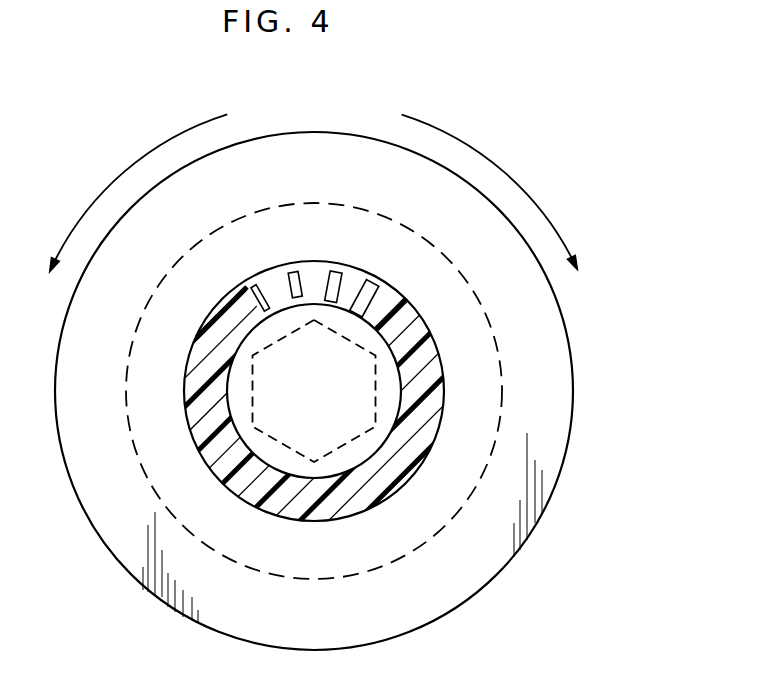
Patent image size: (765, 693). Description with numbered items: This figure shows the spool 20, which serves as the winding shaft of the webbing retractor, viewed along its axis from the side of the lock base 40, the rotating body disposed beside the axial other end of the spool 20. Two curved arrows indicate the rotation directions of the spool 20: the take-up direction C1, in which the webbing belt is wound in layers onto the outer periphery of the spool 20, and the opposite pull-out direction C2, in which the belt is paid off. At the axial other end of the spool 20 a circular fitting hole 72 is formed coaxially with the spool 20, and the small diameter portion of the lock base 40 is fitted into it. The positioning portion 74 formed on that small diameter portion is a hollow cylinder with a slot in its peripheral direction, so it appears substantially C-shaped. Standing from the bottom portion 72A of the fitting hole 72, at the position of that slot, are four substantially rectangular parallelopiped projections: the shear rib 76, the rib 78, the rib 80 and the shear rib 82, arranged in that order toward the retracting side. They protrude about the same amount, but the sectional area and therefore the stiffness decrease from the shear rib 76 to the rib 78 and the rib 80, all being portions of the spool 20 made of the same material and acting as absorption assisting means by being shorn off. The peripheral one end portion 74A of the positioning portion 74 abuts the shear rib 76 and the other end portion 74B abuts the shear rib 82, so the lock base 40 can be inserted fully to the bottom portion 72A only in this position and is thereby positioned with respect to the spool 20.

The spool 20 is at (307, 132).
The lock base 40 is at (505, 400).
The fitting hole 72 is at (278, 306).
The bottom portion 72A is at (315, 278).
The positioning portion 74 is at (446, 377).
The peripheral-direction one end portion 74A is at (387, 293).
The peripheral-direction other end portion 74B is at (250, 278).
The shear rib 76 is at (363, 278).
The rib 78 is at (340, 270).
The rib 80 is at (293, 270).
The shear rib 82 is at (268, 283).
The take-up direction C1 is at (130, 170).
The pull-out direction C2 is at (513, 178).